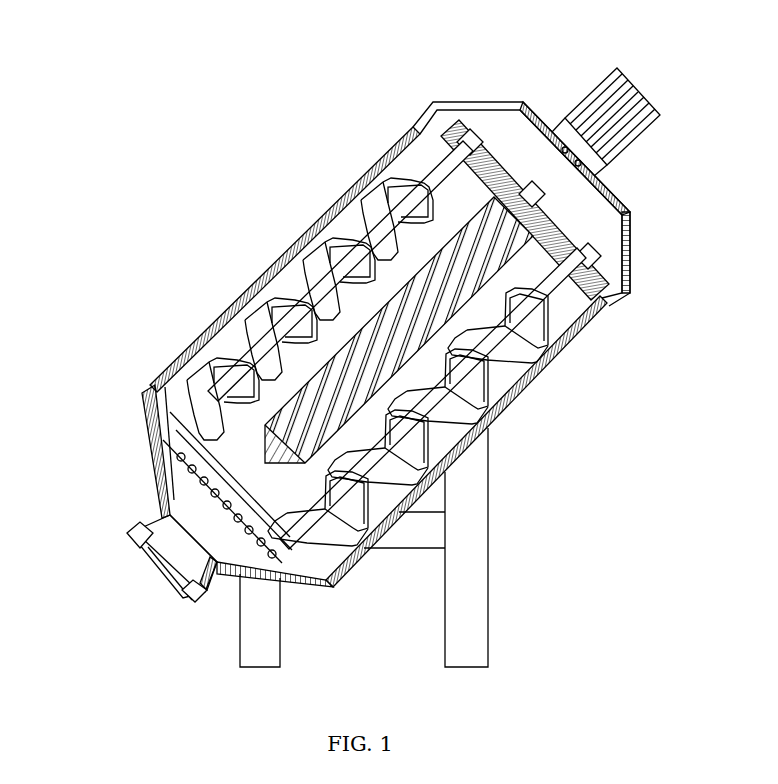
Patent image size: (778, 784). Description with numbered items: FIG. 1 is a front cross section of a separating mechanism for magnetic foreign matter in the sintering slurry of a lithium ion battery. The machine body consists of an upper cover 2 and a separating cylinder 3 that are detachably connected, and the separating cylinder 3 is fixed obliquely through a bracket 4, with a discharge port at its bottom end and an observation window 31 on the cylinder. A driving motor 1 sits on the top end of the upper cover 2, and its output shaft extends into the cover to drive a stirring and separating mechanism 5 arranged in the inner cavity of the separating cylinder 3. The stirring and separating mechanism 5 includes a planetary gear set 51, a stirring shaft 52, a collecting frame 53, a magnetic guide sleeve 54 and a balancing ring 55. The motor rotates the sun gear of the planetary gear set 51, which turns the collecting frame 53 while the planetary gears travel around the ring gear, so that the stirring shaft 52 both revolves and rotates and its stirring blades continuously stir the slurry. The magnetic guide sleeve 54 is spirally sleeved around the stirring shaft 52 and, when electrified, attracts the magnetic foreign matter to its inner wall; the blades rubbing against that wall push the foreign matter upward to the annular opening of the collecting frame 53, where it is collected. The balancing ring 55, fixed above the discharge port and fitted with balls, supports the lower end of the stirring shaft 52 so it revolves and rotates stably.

The driving motor 1 is at (573, 141).
The upper cover 2 is at (521, 160).
The separating cylinder 3 is at (132, 473).
The observation window 31 is at (138, 580).
The bracket 4 is at (408, 547).
The stirring and separating mechanism 5 is at (231, 221).
The planetary gear set 51 is at (463, 182).
The stirring shaft 52 is at (330, 290).
The collecting frame 53 is at (363, 330).
The magnetic guide sleeve 54 is at (350, 397).
The balancing ring 55 is at (166, 428).